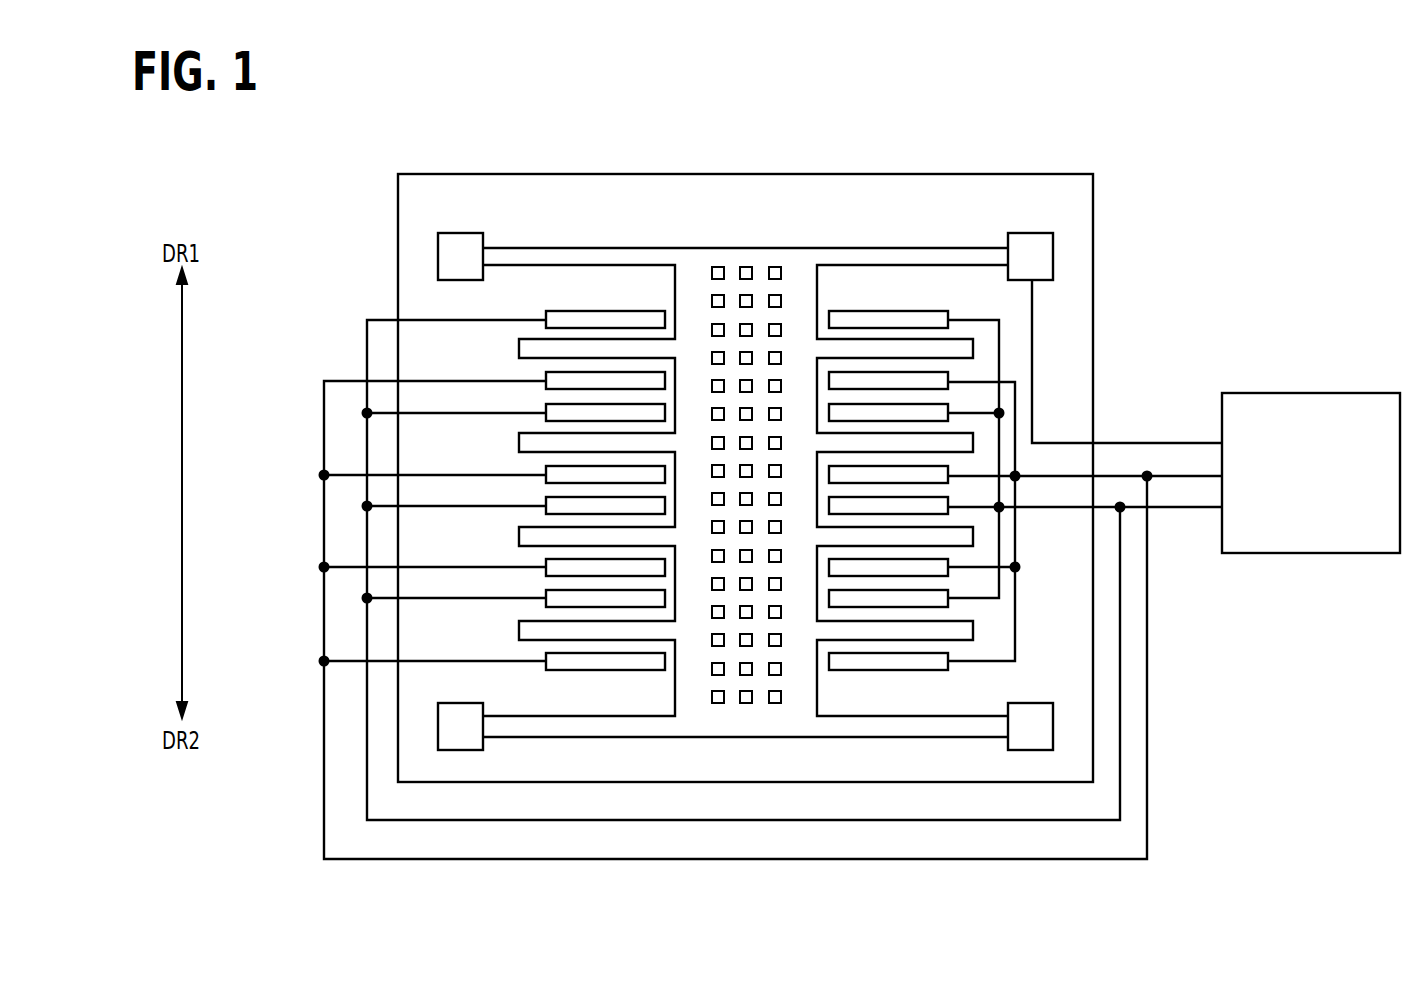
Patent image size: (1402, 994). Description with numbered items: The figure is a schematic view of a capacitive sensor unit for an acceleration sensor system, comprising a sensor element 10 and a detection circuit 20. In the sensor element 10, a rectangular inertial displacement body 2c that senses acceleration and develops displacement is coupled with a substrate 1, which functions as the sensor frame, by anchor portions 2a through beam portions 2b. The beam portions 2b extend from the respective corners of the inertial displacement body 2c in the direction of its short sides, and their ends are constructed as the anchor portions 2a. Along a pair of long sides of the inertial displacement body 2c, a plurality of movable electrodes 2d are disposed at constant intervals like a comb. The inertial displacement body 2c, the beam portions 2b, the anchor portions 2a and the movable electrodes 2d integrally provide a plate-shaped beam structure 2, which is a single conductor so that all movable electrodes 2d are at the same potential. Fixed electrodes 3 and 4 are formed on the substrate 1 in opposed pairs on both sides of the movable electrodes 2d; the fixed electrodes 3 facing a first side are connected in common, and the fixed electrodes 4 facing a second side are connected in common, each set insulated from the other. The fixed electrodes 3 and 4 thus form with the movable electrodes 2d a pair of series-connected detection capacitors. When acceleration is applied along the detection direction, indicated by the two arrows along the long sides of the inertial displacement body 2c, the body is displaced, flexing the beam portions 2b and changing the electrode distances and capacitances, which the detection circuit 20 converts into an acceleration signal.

The substrate 1 is at (1007, 175).
The beam structure 2 is at (752, 243).
The anchor portions 2a is at (438, 256).
The beam portions 2b is at (567, 253).
The inertial displacement body 2c is at (748, 727).
The movable electrodes 2d is at (519, 349).
The fixed electrodes 3 is at (546, 312).
The fixed electrodes 4 is at (546, 373).
The sensor element 10 is at (690, 170).
The detection circuit 20 is at (1315, 393).